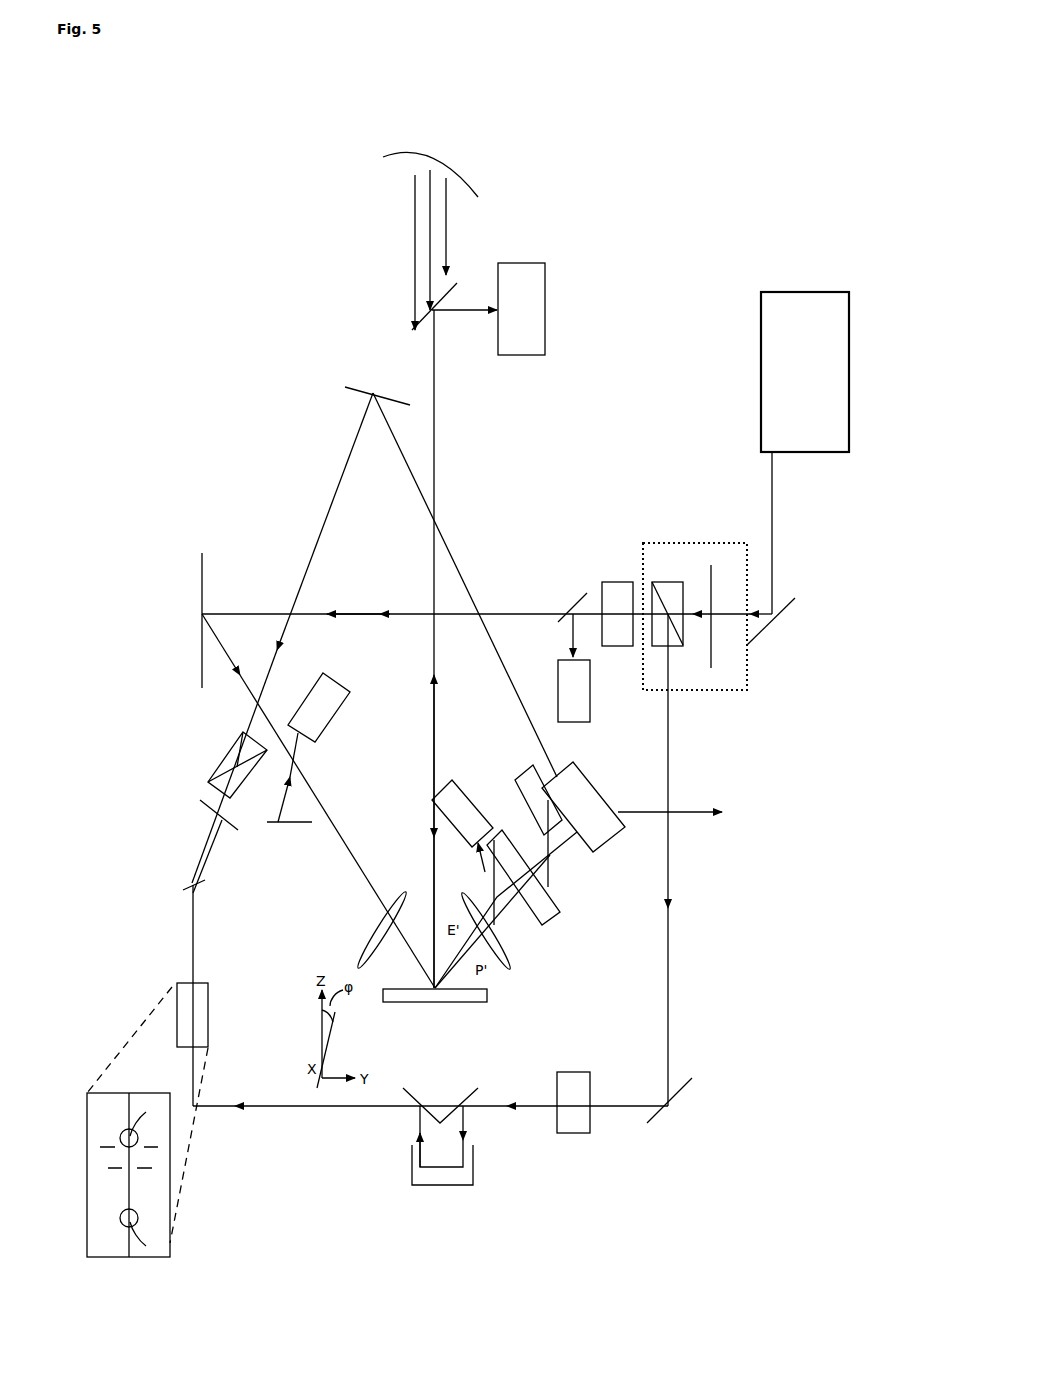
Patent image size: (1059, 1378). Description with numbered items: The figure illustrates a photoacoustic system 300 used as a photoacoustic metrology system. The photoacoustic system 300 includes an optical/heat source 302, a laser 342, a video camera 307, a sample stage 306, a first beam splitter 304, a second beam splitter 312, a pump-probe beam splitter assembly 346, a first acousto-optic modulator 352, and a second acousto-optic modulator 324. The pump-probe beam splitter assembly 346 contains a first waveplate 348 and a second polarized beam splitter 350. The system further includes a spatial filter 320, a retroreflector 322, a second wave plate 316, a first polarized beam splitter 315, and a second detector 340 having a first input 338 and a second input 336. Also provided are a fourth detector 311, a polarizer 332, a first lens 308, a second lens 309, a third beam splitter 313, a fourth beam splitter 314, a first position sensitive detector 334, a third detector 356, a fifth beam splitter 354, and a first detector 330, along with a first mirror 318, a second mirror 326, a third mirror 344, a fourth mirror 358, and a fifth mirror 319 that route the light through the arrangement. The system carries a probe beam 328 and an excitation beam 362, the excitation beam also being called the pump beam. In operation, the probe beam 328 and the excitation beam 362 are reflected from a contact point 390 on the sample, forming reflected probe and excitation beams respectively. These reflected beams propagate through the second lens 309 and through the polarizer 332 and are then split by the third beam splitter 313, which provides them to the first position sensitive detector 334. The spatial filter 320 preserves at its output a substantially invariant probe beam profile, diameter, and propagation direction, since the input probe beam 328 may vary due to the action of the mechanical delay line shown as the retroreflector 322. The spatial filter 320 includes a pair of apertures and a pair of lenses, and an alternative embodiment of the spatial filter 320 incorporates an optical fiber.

The photoacoustic system 300 is at (723, 57).
The optical/heat source 302 is at (430, 152).
The first beam splitter 304 is at (413, 330).
The sample stage 306 is at (487, 1002).
The video camera 307 is at (540, 263).
The first lens 308 is at (390, 888).
The second lens 309 is at (500, 965).
The fourth detector 311 is at (326, 676).
The second beam splitter 312 is at (270, 823).
The third beam splitter 313 is at (548, 870).
The fourth beam splitter 314 is at (485, 900).
The first polarized beam splitter 315 is at (245, 733).
The wave plate 2 316 is at (197, 807).
The first mirror 318 is at (193, 881).
The fifth mirror 319 is at (202, 614).
The spatial filter 320 is at (175, 985).
The retroreflector 322 is at (457, 1185).
The second acousto-optic modulator 324 is at (577, 1133).
The second mirror 326 is at (692, 1078).
The probe beam 328 is at (668, 1010).
The first detector 330 is at (428, 800).
The polarizer 332 is at (560, 918).
The first position sensitive detector 334 is at (533, 766).
The second input 336 is at (577, 840).
The first input 338 is at (553, 773).
The second detector 340 is at (603, 790).
The laser 342 is at (805, 453).
The third mirror 344 is at (840, 628).
The pump-probe beam splitter assembly 346 is at (692, 543).
The waveplate 1 348 is at (711, 668).
The second polarized beam splitter 350 is at (653, 580).
The first acousto-optic modulator 352 is at (632, 577).
The fifth beam splitter 354 is at (573, 602).
The third detector 356 is at (557, 680).
The fourth mirror 358 is at (348, 388).
The excitation beam 362 is at (392, 612).
The contact point 390 is at (445, 995).